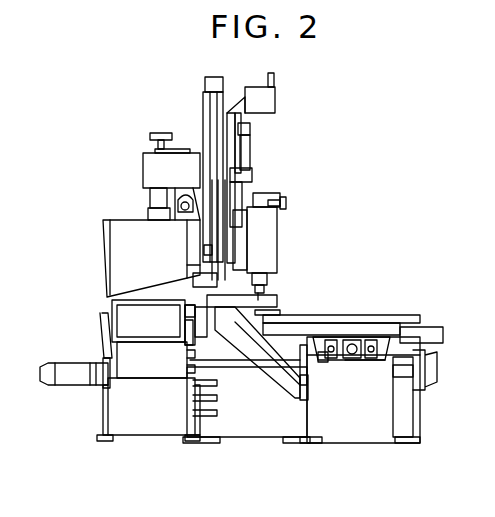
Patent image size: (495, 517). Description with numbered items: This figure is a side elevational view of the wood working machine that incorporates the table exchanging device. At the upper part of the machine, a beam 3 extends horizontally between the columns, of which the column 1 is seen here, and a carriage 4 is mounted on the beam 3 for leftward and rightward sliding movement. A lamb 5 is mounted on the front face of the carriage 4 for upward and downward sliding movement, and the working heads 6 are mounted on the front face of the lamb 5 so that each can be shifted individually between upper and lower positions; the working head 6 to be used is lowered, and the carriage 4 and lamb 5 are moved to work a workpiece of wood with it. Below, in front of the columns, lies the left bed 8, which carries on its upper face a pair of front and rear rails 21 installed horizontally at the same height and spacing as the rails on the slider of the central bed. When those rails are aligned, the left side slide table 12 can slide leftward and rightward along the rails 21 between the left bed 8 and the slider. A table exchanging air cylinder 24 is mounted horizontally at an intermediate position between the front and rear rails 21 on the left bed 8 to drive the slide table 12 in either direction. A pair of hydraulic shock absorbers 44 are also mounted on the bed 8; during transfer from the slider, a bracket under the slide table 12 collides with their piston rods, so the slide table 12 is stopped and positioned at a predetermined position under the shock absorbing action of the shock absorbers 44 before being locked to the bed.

The column 1 is at (147, 366).
The beam 3 is at (122, 225).
The carriage 4 is at (185, 188).
The lamb 5 is at (225, 222).
The working head 6 is at (265, 243).
The left bed 8 is at (352, 380).
The left side slide table 12 is at (358, 330).
The front and rear rails 21 is at (313, 338).
The table exchanging air cylinder 24 is at (357, 360).
The hydraulic shock absorber 44 is at (333, 357).